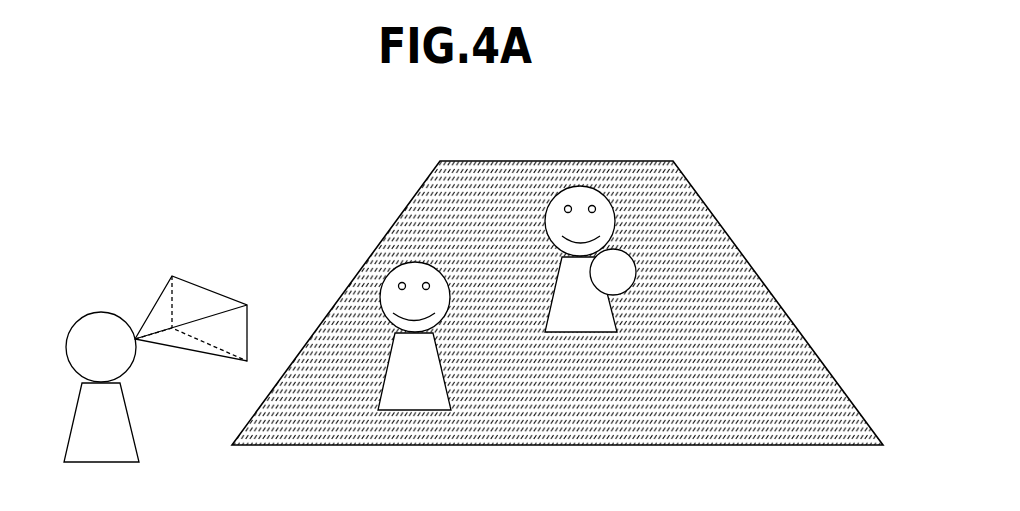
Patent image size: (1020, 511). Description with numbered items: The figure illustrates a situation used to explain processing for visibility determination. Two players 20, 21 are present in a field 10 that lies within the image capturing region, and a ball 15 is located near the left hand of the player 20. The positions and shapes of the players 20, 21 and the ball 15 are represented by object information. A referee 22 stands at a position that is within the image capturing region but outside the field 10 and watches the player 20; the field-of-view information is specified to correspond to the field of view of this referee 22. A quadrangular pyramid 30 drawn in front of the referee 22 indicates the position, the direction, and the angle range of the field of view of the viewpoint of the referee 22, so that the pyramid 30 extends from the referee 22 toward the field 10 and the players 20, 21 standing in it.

The field 10 is at (785, 305).
The ball 15 is at (625, 260).
The player 20 is at (583, 190).
The player 21 is at (387, 264).
The referee 22 is at (100, 318).
The quadrangular pyramid 30 is at (162, 295).